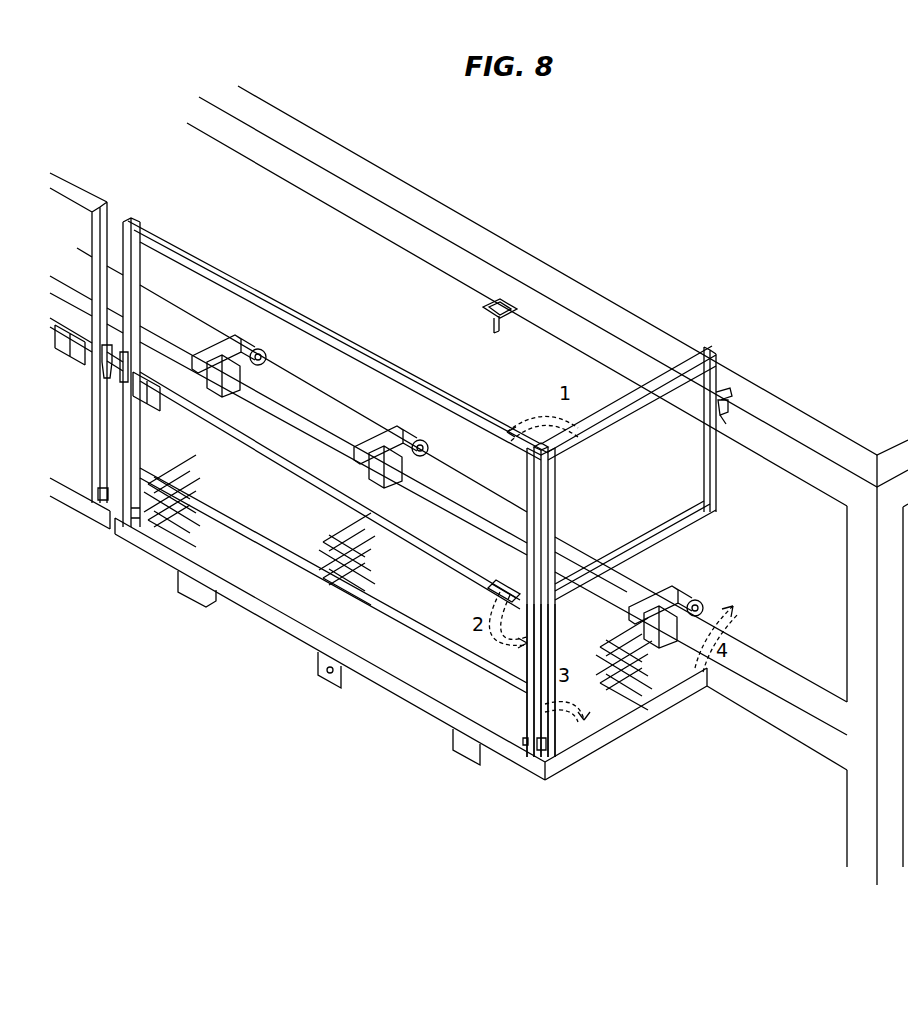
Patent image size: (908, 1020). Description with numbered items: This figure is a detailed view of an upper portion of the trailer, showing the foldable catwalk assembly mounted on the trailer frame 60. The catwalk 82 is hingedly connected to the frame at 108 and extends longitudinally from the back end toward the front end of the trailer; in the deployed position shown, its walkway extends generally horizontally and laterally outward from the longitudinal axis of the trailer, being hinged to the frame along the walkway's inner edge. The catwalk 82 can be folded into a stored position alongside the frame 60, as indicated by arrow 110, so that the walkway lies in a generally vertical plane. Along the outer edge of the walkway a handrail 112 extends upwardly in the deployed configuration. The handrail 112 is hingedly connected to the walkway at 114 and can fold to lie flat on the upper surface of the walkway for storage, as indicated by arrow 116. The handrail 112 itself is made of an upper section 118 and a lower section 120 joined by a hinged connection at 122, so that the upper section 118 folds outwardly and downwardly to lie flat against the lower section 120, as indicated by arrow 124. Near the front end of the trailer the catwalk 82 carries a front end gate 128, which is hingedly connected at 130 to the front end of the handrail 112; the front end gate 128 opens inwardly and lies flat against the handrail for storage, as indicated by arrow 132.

The frame 60 is at (787, 722).
The catwalk 82 is at (398, 582).
The hinged connection of catwalk to frame 108 is at (697, 589).
The arrow indicating catwalk folding 110 is at (736, 615).
The handrail 112 is at (354, 319).
The hinged connection of handrail to walkway 114 is at (547, 757).
The arrow indicating handrail folding 116 is at (588, 712).
The upper section of handrail 118 is at (141, 288).
The lower section of handrail 120 is at (141, 437).
The hinged connection between handrail sections 122 is at (492, 588).
The arrow indicating upper handrail section folding 124 is at (496, 648).
The front end gate 128 is at (622, 545).
The hinged connection of front end gate to handrail 130 is at (549, 447).
The arrow indicating front end gate folding 132 is at (529, 422).